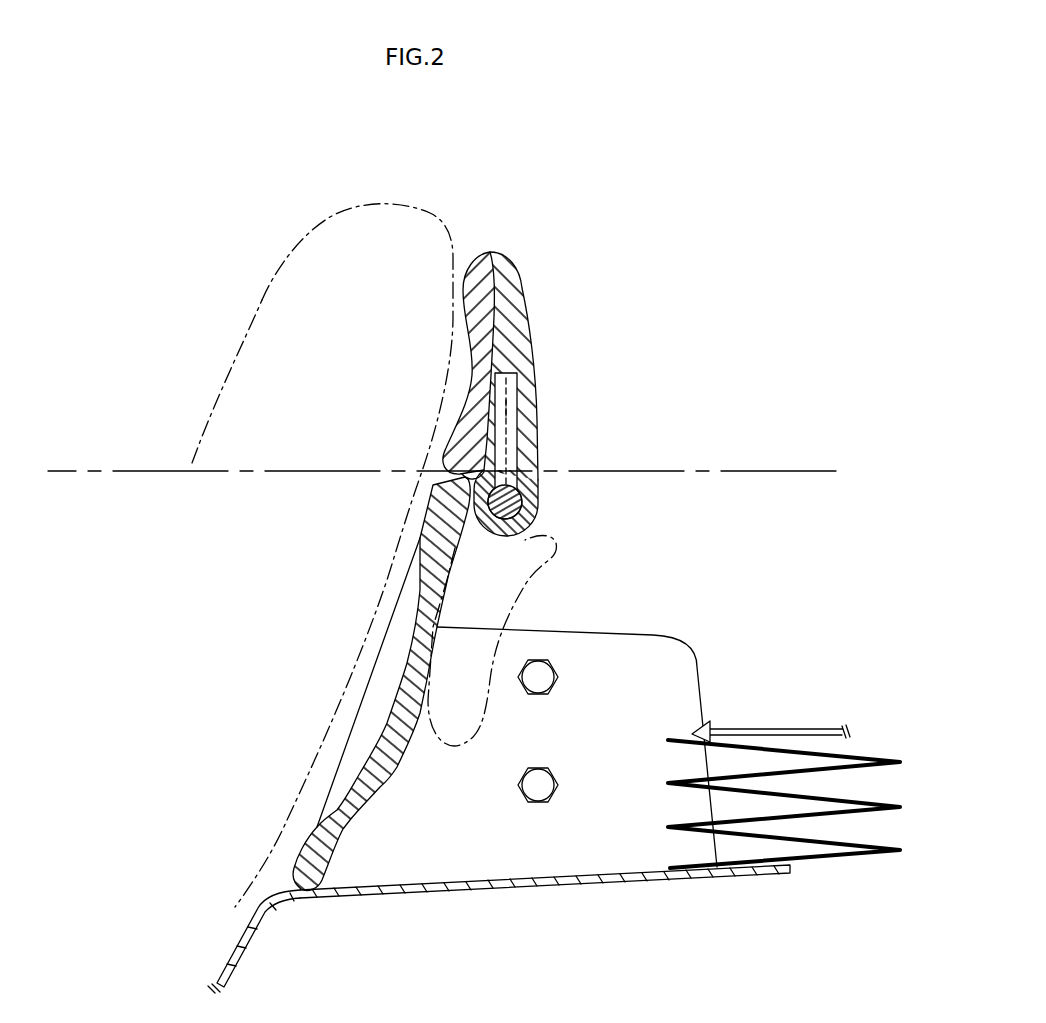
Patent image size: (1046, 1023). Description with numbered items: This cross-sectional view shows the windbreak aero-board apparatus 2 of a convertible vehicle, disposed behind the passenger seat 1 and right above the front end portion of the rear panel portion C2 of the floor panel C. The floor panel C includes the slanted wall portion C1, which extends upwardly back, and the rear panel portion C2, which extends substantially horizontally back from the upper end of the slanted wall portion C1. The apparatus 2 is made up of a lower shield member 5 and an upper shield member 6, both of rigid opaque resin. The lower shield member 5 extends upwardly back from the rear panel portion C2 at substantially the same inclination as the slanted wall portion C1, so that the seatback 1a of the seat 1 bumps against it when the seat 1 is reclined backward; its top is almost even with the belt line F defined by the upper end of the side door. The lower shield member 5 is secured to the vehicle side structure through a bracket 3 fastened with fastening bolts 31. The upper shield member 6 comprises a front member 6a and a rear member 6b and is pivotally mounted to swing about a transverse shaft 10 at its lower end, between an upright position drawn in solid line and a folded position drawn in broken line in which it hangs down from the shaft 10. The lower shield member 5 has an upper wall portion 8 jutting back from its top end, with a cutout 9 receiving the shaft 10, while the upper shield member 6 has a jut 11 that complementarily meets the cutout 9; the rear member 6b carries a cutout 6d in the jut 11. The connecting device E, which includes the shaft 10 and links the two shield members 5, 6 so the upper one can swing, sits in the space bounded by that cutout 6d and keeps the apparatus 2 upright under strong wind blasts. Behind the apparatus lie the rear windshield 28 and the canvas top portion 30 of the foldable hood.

The passenger seat 1 is at (328, 222).
The seatback 1a is at (247, 358).
The windbreak aero-board apparatus 2 is at (606, 369).
The bracket 3 is at (660, 646).
The lower shield member 5 is at (387, 780).
The upper shield member 6 is at (524, 366).
The front member 6a is at (475, 264).
The rear member 6b is at (512, 266).
The cutout 6d is at (512, 382).
The upper wall portion 8 is at (540, 470).
The cutout 9 is at (480, 533).
The shaft 10 is at (512, 505).
The jut 11 is at (500, 536).
The rear windshield 28 is at (768, 729).
The canvas top portion 30 is at (868, 757).
The fastening bolt 31 is at (552, 686).
The floor panel C is at (499, 941).
The slanted wall portion C1 is at (243, 947).
The rear panel portion C2 is at (486, 888).
The connecting device E is at (500, 416).
The belt line F is at (117, 470).